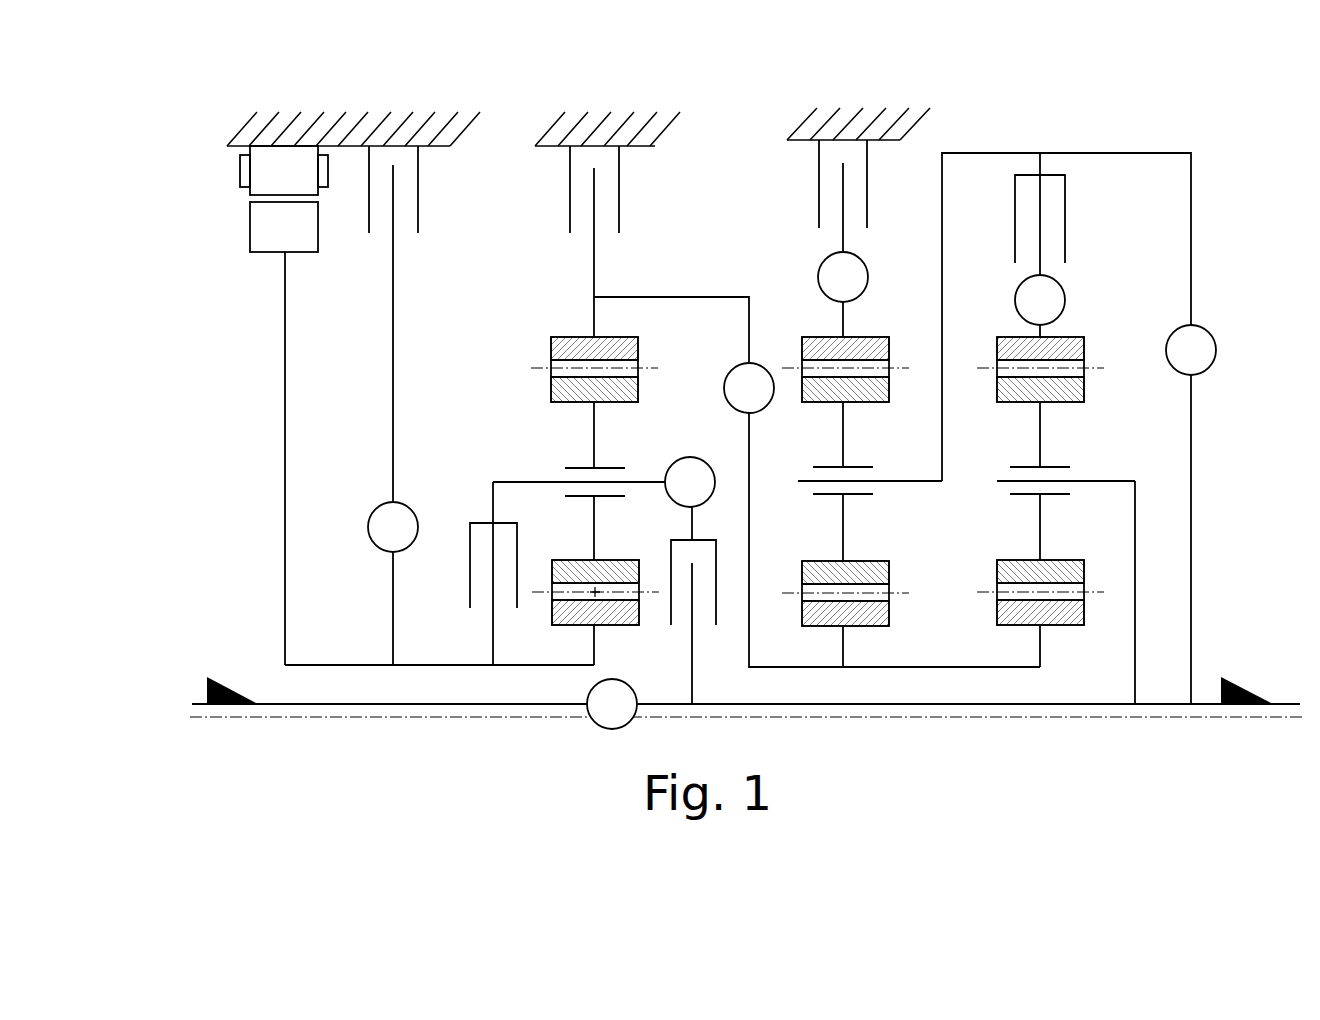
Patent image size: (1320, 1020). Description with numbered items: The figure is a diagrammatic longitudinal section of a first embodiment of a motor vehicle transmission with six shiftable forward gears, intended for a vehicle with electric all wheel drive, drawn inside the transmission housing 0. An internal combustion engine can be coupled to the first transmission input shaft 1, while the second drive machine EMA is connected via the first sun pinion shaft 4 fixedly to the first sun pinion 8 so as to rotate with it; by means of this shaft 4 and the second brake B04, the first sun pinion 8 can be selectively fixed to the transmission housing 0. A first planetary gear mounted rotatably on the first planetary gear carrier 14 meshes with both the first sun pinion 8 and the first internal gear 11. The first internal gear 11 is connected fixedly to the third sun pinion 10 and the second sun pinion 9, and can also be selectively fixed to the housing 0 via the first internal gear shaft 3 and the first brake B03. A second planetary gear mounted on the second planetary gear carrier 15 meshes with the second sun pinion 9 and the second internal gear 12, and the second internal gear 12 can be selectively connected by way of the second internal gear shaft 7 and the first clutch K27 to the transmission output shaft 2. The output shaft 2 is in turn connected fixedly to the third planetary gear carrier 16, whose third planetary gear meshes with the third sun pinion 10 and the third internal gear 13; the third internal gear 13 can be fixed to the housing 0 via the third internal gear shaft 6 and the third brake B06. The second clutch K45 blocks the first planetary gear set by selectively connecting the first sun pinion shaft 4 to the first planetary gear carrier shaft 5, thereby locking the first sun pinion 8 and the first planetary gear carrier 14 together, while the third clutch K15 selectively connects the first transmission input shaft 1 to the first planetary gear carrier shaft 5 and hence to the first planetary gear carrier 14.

The transmission housing 0 is at (473, 116).
The second drive machine EMA is at (226, 192).
The second brake B04 is at (418, 185).
The first brake B03 is at (619, 176).
The third brake B06 is at (870, 162).
The second clutch K45 is at (472, 521).
The third clutch K15 is at (716, 626).
The first clutch K27 is at (1065, 175).
The first transmission input shaft 1 is at (747, 677).
The transmission output shaft 2 is at (1079, 428).
The first internal gear shaft 3 is at (817, 482).
The first sun pinion shaft 4 is at (439, 415).
The first planetary gear carrier shaft 5 is at (604, 580).
The third internal gear shaft 6 is at (843, 415).
The second internal gear shaft 7 is at (1040, 410).
The first sun pinion 8 is at (617, 627).
The second sun pinion 9 is at (1063, 627).
The third sun pinion 10 is at (889, 613).
The first internal gear 11 is at (552, 337).
The second internal gear 12 is at (1083, 335).
The third internal gear 13 is at (805, 335).
The first planetary gear carrier 14 is at (548, 480).
The second planetary gear carrier 15 is at (1073, 481).
The third planetary gear carrier 16 is at (885, 481).